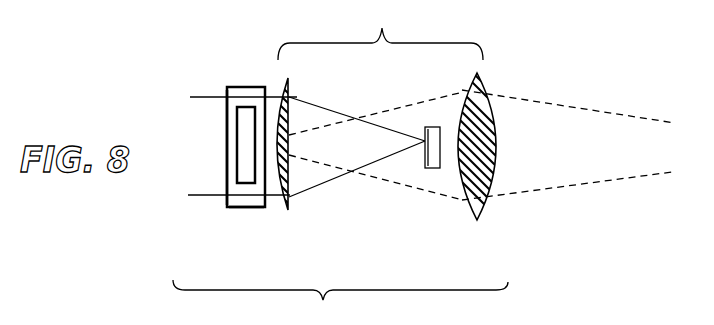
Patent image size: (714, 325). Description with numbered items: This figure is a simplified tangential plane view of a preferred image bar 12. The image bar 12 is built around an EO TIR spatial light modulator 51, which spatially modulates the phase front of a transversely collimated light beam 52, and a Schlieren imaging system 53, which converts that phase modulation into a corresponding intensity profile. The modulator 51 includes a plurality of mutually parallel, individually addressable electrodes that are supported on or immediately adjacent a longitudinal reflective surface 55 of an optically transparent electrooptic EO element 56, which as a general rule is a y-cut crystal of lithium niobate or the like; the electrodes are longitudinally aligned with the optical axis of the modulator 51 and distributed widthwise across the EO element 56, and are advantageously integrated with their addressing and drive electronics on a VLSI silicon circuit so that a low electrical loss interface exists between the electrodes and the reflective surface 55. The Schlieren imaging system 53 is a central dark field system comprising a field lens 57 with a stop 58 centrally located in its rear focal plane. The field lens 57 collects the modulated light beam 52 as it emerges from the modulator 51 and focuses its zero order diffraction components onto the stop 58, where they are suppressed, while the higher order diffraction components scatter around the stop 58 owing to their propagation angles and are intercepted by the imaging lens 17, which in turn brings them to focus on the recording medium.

The image bar 12 is at (340, 302).
The imaging lens 17 is at (493, 112).
The EO TIR spatial light modulator 51 is at (248, 82).
The light beam 52 is at (199, 168).
The Schlieren imaging system 53 is at (380, 32).
The reflective surface 55 is at (228, 115).
The EO element 56 is at (240, 208).
The field lens 57 is at (268, 141).
The stop 58 is at (428, 168).